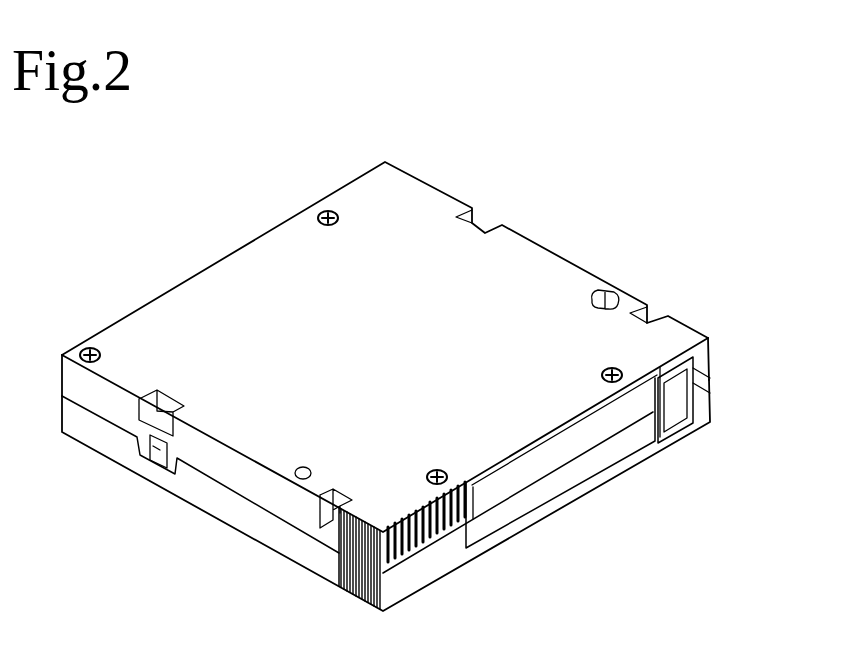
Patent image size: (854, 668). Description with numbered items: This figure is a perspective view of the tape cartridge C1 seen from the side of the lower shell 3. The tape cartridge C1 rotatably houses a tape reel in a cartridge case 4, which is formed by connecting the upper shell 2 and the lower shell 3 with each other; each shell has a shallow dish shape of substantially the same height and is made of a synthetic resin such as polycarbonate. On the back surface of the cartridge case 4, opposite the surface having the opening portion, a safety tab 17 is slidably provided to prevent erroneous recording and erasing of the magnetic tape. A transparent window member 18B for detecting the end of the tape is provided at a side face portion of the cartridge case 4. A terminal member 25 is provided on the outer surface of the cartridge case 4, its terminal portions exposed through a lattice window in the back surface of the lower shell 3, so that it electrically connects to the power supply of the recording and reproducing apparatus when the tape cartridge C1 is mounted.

The tape cartridge C1 is at (171, 241).
The upper shell 2 is at (300, 550).
The lower shell 3 is at (267, 493).
The cartridge case 4 is at (225, 568).
The safety tab 17 is at (712, 350).
The transparent window member 18B is at (150, 456).
The terminal member 25 is at (440, 535).